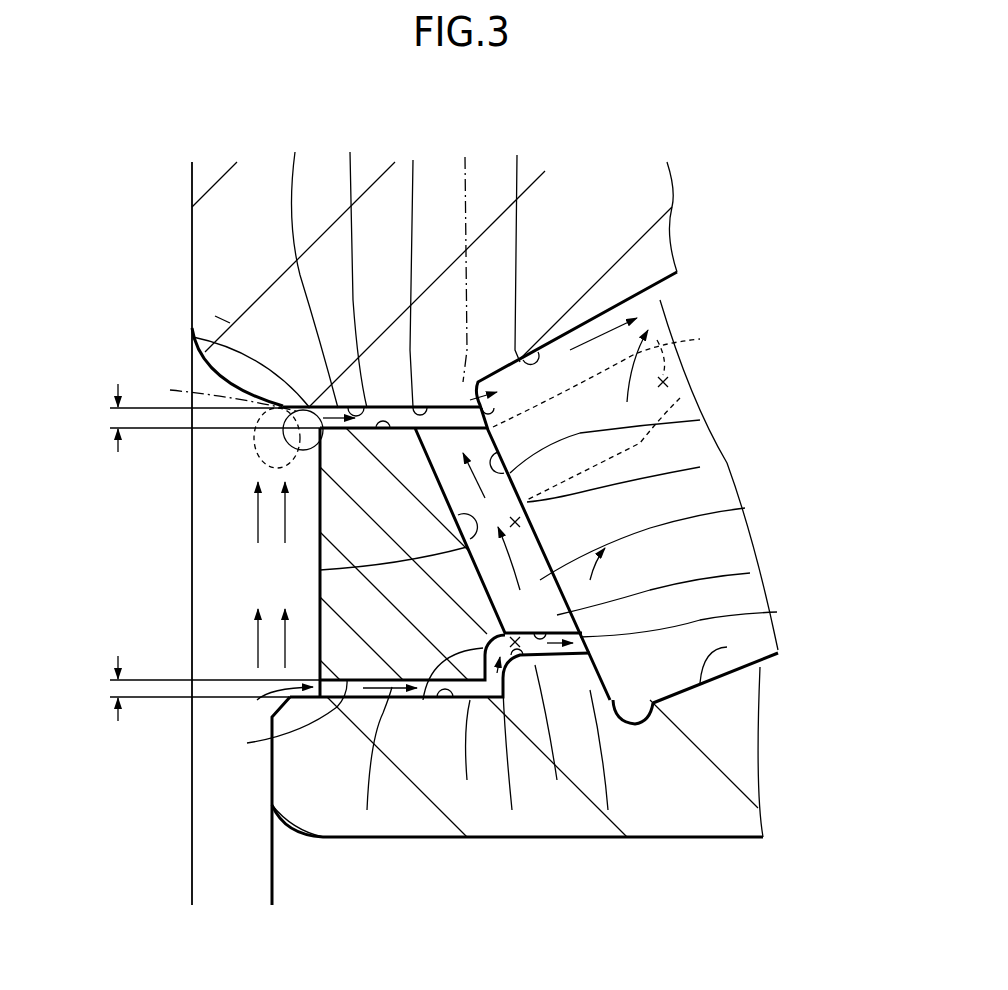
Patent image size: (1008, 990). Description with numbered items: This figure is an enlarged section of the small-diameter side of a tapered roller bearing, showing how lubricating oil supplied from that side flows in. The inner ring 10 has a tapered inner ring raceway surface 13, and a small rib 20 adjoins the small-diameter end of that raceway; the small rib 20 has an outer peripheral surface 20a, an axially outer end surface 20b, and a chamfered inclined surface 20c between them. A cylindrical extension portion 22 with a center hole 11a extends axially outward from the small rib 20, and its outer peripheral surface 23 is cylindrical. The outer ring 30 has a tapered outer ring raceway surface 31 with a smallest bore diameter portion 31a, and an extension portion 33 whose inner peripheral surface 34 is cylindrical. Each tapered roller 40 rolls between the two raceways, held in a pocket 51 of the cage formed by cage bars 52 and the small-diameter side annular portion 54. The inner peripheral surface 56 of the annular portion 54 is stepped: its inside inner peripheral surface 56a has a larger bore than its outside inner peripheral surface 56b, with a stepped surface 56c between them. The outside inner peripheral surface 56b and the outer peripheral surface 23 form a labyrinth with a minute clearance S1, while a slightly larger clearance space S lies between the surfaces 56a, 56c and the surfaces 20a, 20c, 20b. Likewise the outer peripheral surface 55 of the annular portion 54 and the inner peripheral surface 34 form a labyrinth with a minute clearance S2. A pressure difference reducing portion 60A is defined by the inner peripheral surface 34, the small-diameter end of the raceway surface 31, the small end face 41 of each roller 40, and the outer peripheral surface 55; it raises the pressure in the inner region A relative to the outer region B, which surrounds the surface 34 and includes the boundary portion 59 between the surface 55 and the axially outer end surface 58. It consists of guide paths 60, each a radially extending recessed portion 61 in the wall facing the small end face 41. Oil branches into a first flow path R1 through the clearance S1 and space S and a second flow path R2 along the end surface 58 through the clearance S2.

The inner ring 10 is at (763, 737).
The center hole of the extension portion 11a is at (323, 837).
The inner ring raceway surface 13 is at (727, 647).
The small rib 20 is at (777, 612).
The outer peripheral surface of the small rib 20a is at (608, 810).
The axially outer end surface of the small rib 20b is at (512, 810).
The inclined surface 20c is at (557, 780).
The extension portion 22 is at (303, 770).
The outer peripheral surface of the extension portion 23 is at (467, 780).
The outer ring 30 is at (189, 247).
The outer ring raceway surface 31 is at (514, 241).
The smallest bore diameter portion 31a is at (410, 264).
The extension portion 33 is at (222, 320).
The inner peripheral surface of the extension portion 34 is at (350, 264).
The tapered roller 40 is at (752, 555).
The small end face 41 is at (700, 420).
The pocket 51 is at (700, 339).
The cage bar 52 is at (680, 398).
The small-diameter side annular portion 54 is at (352, 545).
The outer peripheral surface of the small-diameter side annular portion 55 is at (280, 467).
The inner peripheral surface of the small-diameter side annular portion 56 is at (469, 731).
The inside inner peripheral surface 56a is at (750, 573).
The outside inner peripheral surface 56b is at (247, 743).
The stepped surface 56c is at (423, 700).
The axially outer end surface of the small-diameter side annular portion 58 is at (320, 587).
The boundary portion 59 is at (255, 362).
The guide path 60 is at (700, 467).
The pressure difference reducing portion 60A is at (692, 471).
The recessed portion 61 is at (320, 570).
The inner region A is at (465, 251).
The outer region B is at (223, 392).
The clearance space S is at (745, 508).
The minute clearance S1 is at (198, 688).
The minute clearance S2 is at (195, 418).
The first flow path R1 is at (367, 810).
The second flow path R2 is at (308, 264).